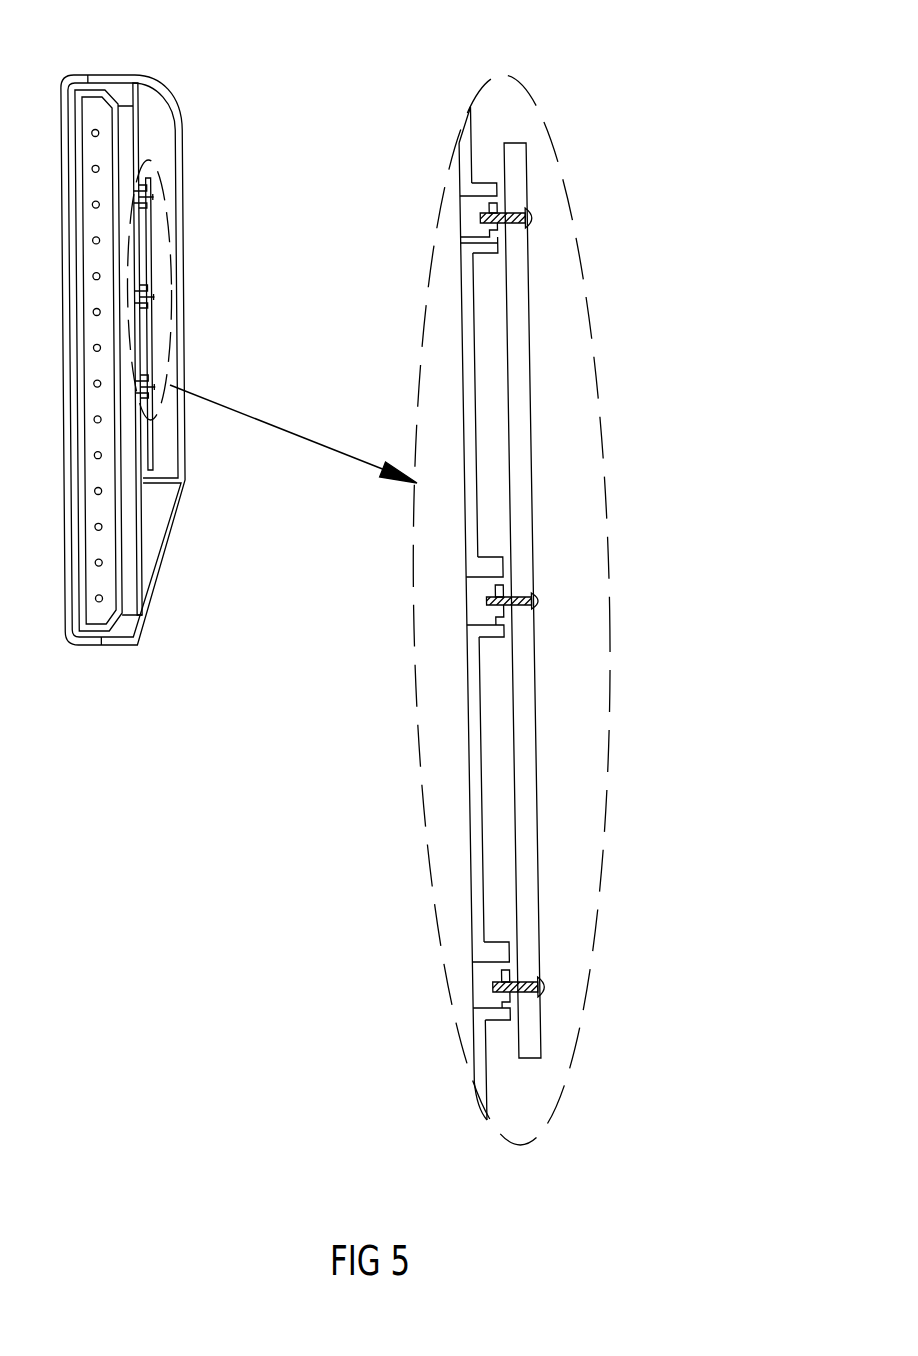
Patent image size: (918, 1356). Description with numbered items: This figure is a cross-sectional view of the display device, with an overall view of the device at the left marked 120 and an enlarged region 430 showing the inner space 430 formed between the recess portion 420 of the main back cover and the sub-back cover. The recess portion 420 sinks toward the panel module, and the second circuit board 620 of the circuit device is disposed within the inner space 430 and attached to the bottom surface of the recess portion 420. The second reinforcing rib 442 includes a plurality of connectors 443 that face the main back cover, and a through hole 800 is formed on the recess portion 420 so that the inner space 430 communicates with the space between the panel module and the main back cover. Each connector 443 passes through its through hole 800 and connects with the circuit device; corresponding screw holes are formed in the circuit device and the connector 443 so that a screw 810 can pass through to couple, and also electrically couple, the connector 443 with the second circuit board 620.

The display module 120 is at (56, 40).
The recess portion 420 is at (463, 322).
The inner space 430 is at (558, 427).
The second reinforcing rib 442 is at (443, 630).
The connector 443 is at (466, 239).
The second circuit board 620 is at (517, 162).
The through hole 800 is at (498, 199).
The screw 810 is at (535, 217).